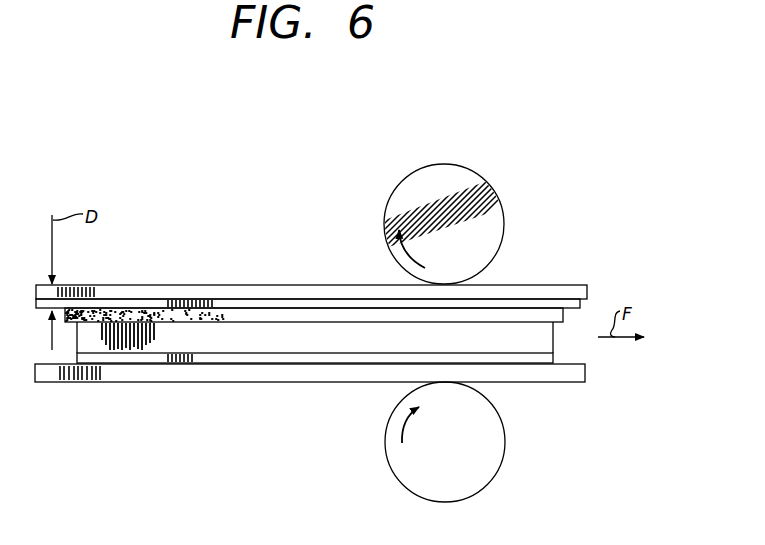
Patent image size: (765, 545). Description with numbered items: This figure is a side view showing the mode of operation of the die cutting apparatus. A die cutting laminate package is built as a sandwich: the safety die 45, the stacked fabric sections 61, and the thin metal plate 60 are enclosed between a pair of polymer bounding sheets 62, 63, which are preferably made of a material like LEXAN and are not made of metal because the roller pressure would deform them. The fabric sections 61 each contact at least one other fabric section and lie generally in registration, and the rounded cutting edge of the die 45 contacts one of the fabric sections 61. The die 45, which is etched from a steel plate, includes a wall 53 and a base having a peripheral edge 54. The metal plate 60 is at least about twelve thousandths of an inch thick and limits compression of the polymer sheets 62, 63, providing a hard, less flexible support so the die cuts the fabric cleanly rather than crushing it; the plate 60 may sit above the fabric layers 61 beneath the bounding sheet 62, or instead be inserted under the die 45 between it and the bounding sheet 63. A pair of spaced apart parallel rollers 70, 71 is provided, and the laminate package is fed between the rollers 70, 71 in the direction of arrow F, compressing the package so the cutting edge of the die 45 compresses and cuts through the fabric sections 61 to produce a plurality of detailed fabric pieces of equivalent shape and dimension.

The die 45 is at (231, 336).
The wall 53 is at (362, 338).
The base 54 is at (275, 356).
The thin metal plate 60 is at (530, 299).
The fabric sections 61 is at (562, 320).
The bounding sheet 62 is at (190, 285).
The bounding sheet 63 is at (48, 382).
The roller 70 is at (462, 165).
The roller 71 is at (499, 468).